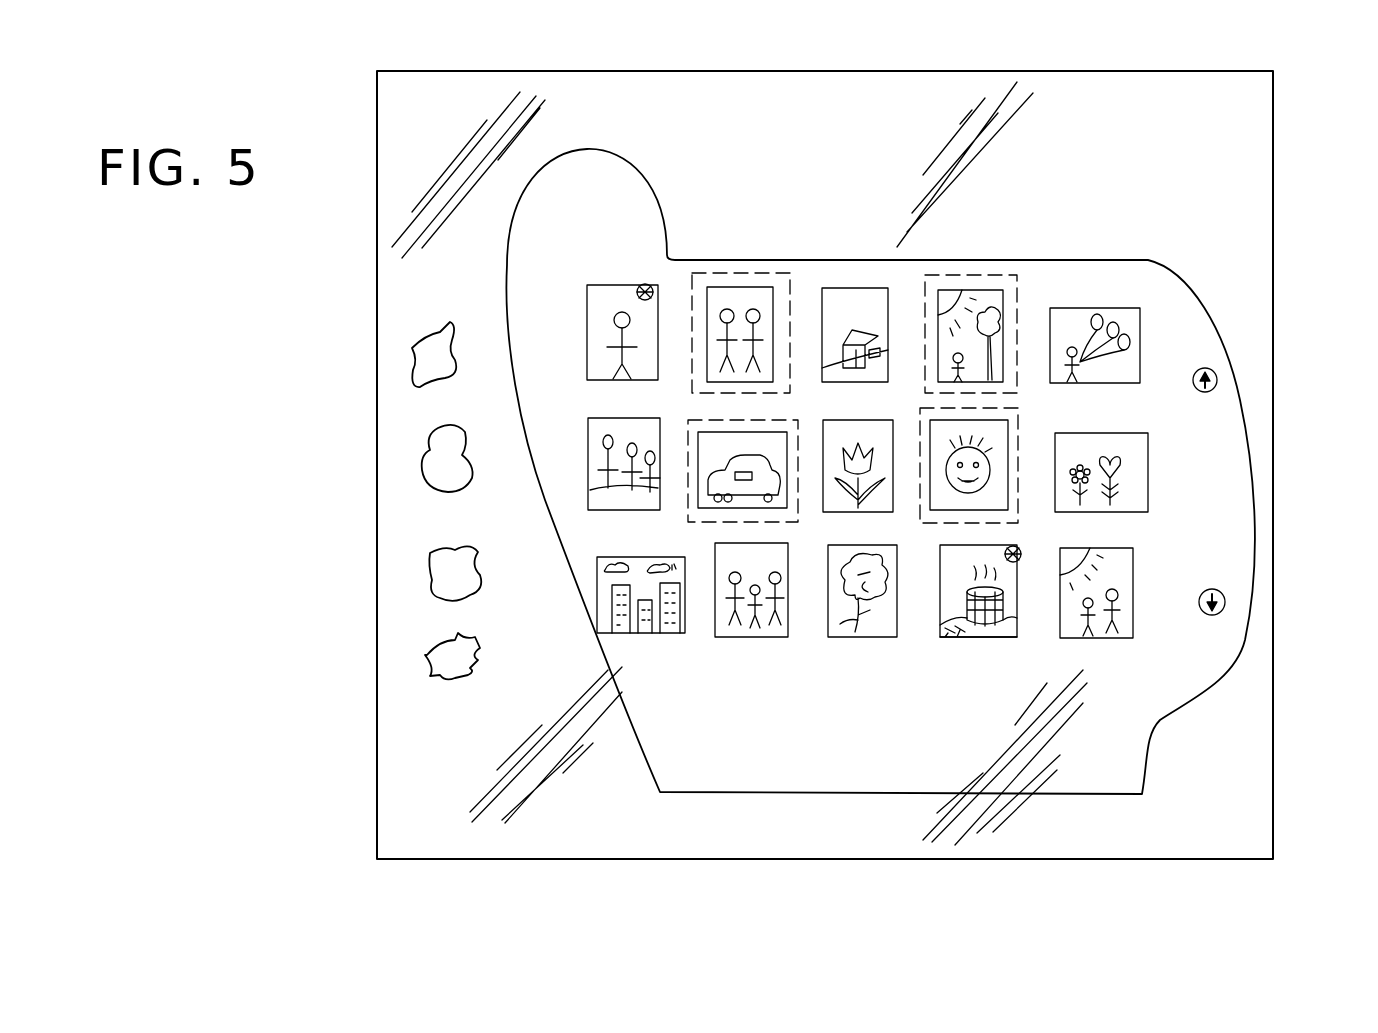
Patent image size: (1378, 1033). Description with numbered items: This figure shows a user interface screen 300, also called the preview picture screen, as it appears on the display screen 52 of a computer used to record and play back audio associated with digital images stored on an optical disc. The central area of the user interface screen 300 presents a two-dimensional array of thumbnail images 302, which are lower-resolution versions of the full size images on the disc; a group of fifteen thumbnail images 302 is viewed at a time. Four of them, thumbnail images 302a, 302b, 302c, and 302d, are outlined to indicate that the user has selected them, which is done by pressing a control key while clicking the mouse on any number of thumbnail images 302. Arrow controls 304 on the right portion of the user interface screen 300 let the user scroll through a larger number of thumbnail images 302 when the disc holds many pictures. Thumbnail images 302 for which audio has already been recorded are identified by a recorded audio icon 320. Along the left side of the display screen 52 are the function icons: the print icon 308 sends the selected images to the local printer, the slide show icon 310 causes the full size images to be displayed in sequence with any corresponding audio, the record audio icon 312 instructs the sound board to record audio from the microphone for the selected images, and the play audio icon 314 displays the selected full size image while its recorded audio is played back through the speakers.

The display screen 52 is at (975, 71).
The user interface screen 300 is at (1102, 260).
The thumbnail images 302 is at (857, 287).
The selected thumbnail image 302a is at (735, 272).
The selected thumbnail image 302b is at (972, 275).
The selected thumbnail image 302c is at (690, 420).
The selected thumbnail image 302d is at (1018, 450).
The arrow controls 304 is at (1218, 381).
The print icon 308 is at (410, 367).
The slide show icon 310 is at (422, 455).
The record audio icon 312 is at (430, 573).
The play audio icon 314 is at (427, 655).
The recorded audio icon 320 is at (643, 284).